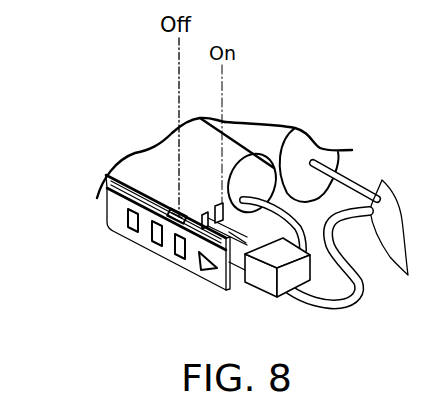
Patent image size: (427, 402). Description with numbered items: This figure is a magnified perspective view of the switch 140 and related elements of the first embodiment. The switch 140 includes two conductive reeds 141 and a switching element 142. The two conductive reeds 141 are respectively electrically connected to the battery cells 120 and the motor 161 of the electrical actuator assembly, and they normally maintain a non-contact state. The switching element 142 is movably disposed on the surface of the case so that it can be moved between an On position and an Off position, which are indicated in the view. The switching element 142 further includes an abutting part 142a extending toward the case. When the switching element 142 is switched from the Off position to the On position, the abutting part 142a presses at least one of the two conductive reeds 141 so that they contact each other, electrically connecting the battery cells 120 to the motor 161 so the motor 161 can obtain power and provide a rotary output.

The battery cells 120 is at (257, 114).
The switch 140 is at (218, 303).
The conductive reeds 141 is at (221, 203).
The switching element 142 is at (147, 238).
The abutting part 142a is at (186, 224).
The motor 161 is at (388, 235).